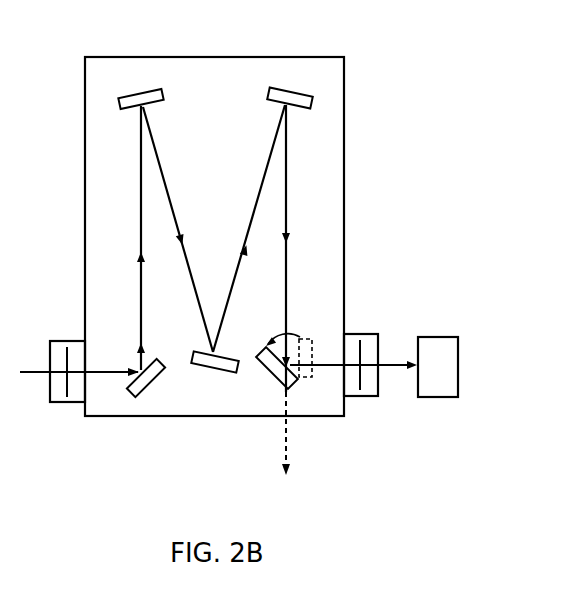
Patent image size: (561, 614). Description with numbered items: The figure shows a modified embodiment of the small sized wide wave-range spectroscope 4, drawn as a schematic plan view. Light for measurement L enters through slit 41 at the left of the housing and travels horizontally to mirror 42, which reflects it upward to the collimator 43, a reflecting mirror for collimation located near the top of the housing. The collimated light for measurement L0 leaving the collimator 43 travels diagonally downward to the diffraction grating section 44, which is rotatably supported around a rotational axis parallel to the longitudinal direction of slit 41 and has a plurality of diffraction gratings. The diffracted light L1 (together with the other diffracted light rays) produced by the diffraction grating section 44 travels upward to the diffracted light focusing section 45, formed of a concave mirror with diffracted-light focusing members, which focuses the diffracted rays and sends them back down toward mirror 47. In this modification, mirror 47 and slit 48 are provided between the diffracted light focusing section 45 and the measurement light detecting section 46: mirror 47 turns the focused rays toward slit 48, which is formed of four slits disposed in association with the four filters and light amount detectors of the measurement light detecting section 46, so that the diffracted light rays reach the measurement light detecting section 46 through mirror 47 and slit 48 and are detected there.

The small sized wide wave-range spectroscope 4 is at (129, 56).
The slit 41 is at (70, 385).
The mirror 42 is at (156, 383).
The collimator 43 is at (160, 93).
The diffraction grating section 44 is at (222, 372).
The diffracted light focusing section 45 is at (282, 97).
The measurement light detecting section 46 is at (439, 391).
The mirror 47 is at (262, 384).
The slit 48 is at (371, 385).
The light for measurement L is at (141, 238).
The collimated light L0 is at (175, 213).
The diffracted light L1 is at (285, 183).